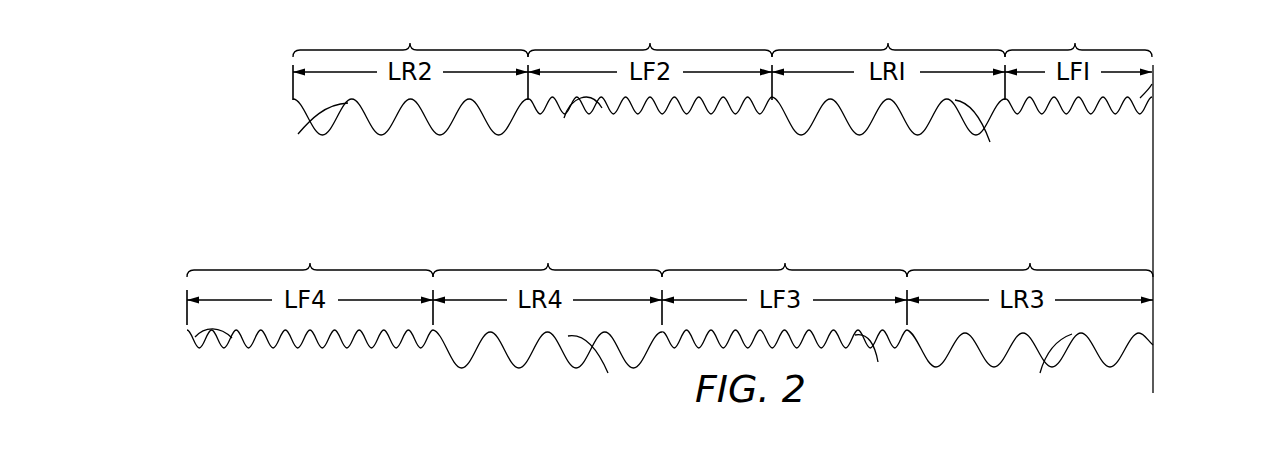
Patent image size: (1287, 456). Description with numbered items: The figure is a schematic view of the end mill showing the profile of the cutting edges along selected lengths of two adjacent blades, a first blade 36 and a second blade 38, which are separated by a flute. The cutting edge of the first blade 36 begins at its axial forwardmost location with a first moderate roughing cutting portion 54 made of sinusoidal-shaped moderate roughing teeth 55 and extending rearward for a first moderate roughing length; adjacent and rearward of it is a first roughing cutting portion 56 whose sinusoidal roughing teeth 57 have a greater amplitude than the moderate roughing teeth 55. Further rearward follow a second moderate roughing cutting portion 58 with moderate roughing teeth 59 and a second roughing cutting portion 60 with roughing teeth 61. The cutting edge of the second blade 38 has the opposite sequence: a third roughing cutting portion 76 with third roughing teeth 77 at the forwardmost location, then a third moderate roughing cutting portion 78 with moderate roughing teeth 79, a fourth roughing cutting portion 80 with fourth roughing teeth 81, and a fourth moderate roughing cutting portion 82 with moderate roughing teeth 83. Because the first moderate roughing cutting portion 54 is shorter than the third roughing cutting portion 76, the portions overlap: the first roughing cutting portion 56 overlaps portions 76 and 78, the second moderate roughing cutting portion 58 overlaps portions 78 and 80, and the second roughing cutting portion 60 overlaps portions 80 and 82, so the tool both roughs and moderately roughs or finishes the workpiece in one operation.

The first blade 36 is at (1156, 136).
The second blade 38 is at (1155, 348).
The first moderate roughing cutting portion 54 is at (1078, 61).
The moderate roughing teeth 55 is at (1140, 98).
The first roughing cutting portion 56 is at (888, 72).
The roughing teeth 57 is at (983, 132).
The second moderate roughing cutting portion 58 is at (650, 61).
The moderate roughing teeth 59 is at (564, 118).
The second roughing cutting portion 60 is at (410, 72).
The roughing teeth 61 is at (303, 129).
The third roughing cutting portion 76 is at (1030, 298).
The third roughing teeth 77 is at (1045, 366).
The third moderate roughing cutting portion 78 is at (784, 288).
The moderate roughing teeth 79 is at (876, 363).
The fourth roughing cutting portion 80 is at (547, 298).
The fourth roughing teeth 81 is at (600, 368).
The fourth moderate roughing cutting portion 82 is at (310, 288).
The moderate roughing teeth 83 is at (197, 336).